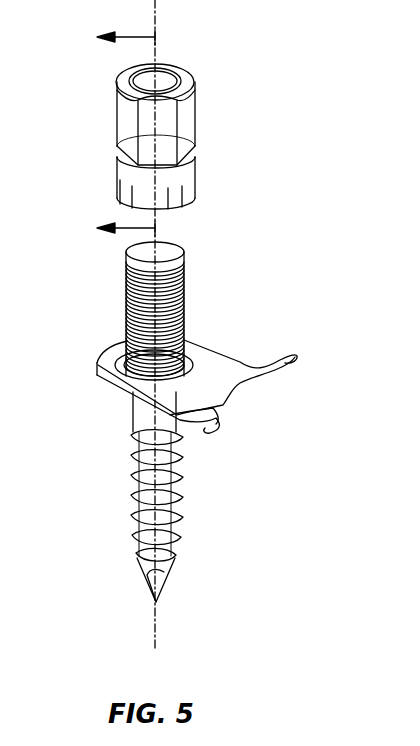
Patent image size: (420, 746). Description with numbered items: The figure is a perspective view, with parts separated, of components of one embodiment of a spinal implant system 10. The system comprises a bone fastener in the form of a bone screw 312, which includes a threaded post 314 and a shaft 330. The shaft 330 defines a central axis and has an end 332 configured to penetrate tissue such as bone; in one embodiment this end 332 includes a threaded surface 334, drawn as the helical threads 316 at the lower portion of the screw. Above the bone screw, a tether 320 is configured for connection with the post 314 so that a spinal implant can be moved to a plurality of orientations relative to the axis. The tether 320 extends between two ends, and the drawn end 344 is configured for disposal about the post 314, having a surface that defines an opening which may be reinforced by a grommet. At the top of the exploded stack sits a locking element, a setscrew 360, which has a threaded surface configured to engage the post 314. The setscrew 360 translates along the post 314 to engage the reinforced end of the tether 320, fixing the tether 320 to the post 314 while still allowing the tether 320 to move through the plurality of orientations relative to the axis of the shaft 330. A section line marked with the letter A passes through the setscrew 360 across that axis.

The spinal implant system 10 is at (384, 122).
The setscrew 360 is at (203, 122).
The bone screw 312 is at (173, 308).
The threaded post 314 is at (186, 280).
The threads 316 is at (130, 303).
The tether 320 is at (168, 376).
The end 344 is at (98, 380).
The shaft 330 is at (148, 497).
The threaded surface 334 is at (130, 473).
The end 332 is at (173, 543).